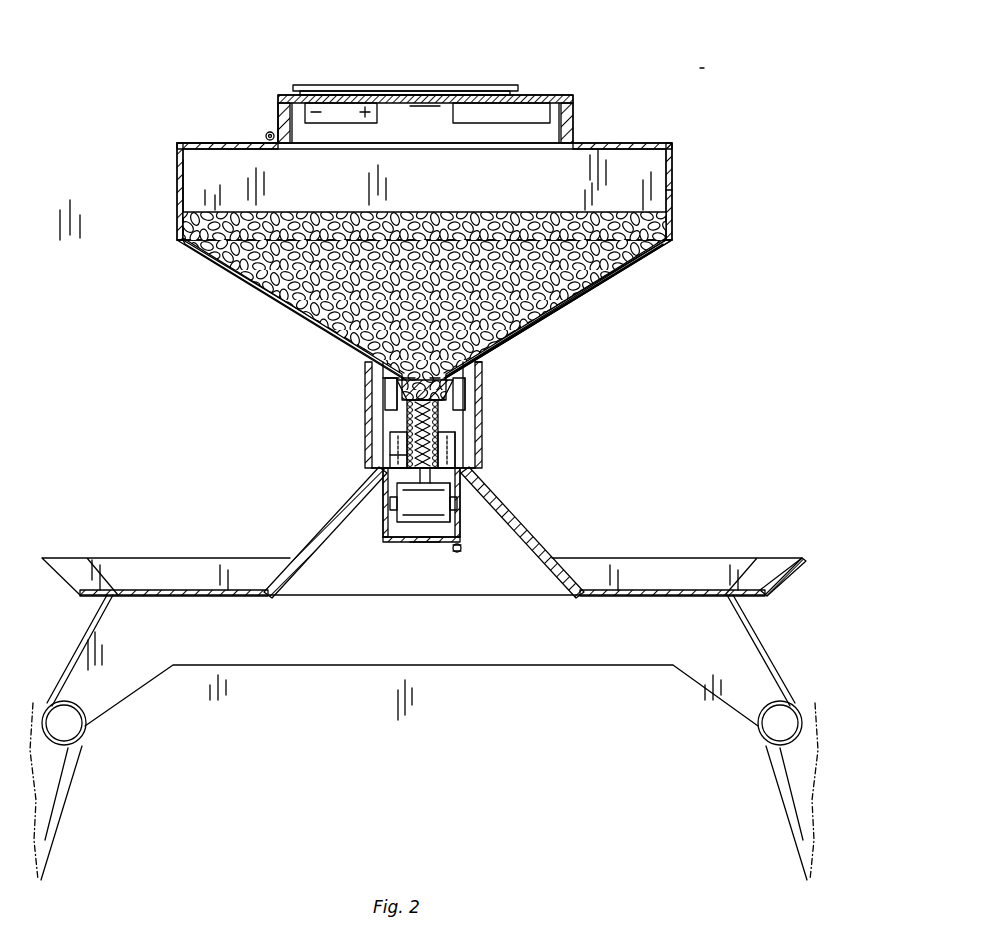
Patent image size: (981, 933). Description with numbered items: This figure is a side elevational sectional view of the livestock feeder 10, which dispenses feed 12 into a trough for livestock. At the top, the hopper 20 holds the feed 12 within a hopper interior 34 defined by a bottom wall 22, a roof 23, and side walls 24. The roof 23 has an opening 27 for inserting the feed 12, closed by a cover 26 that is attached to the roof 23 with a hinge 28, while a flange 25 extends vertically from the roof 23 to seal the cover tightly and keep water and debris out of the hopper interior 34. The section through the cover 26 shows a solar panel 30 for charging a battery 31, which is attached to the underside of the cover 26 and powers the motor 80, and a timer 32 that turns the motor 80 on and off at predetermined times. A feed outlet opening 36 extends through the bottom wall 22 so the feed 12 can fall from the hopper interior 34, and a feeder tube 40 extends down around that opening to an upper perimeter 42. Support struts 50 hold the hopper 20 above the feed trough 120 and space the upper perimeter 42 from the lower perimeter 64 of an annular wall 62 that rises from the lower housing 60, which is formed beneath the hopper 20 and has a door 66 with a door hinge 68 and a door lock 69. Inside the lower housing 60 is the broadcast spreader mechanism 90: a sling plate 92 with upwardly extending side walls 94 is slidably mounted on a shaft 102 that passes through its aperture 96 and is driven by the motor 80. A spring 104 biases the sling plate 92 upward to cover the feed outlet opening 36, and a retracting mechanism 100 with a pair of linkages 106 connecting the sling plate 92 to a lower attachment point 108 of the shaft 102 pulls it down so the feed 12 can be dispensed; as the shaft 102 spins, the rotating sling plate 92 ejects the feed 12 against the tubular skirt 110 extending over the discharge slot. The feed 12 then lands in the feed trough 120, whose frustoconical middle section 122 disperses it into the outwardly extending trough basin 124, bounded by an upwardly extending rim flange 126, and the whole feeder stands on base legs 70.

The livestock feeder 10 is at (706, 62).
The feed 12 is at (437, 215).
The hopper 20 is at (672, 160).
The bottom wall 22 is at (598, 283).
The roof 23 is at (195, 142).
The side walls 24 is at (672, 195).
The flange 25 is at (556, 122).
The cover 26 is at (280, 106).
The opening 27 is at (417, 112).
The hinge 28 is at (265, 133).
The solar panel 30 is at (372, 84).
The battery 31 is at (332, 110).
The timer 32 is at (463, 110).
The hopper interior 34 is at (208, 173).
The feed outlet opening 36 is at (436, 376).
The feeder tube 40 is at (386, 386).
The upper perimeter 42 is at (387, 402).
The support struts 50 is at (392, 440).
The lower housing 60 is at (386, 518).
The annular wall 62 is at (402, 468).
The lower perimeter 64 is at (393, 456).
The door 66 is at (426, 544).
The door hinge 68 is at (386, 540).
The door lock 69 is at (463, 552).
The base legs 70 is at (88, 736).
The motor 80 is at (455, 512).
The broadcast spreader mechanism 90 is at (455, 382).
The sling plate 92 is at (460, 400).
The side walls 94 is at (414, 376).
The aperture 96 is at (466, 414).
The retracting mechanism 100 is at (440, 468).
The shaft 102 is at (432, 542).
The spring 104 is at (405, 542).
The linkages 106 is at (458, 455).
The lower attachment point 108 is at (452, 492).
The tubular skirt 110 is at (483, 444).
The feed trough 120 is at (714, 548).
The frustoconical middle section 122 is at (536, 546).
The trough basin 124 is at (625, 597).
The rim flange 126 is at (776, 588).